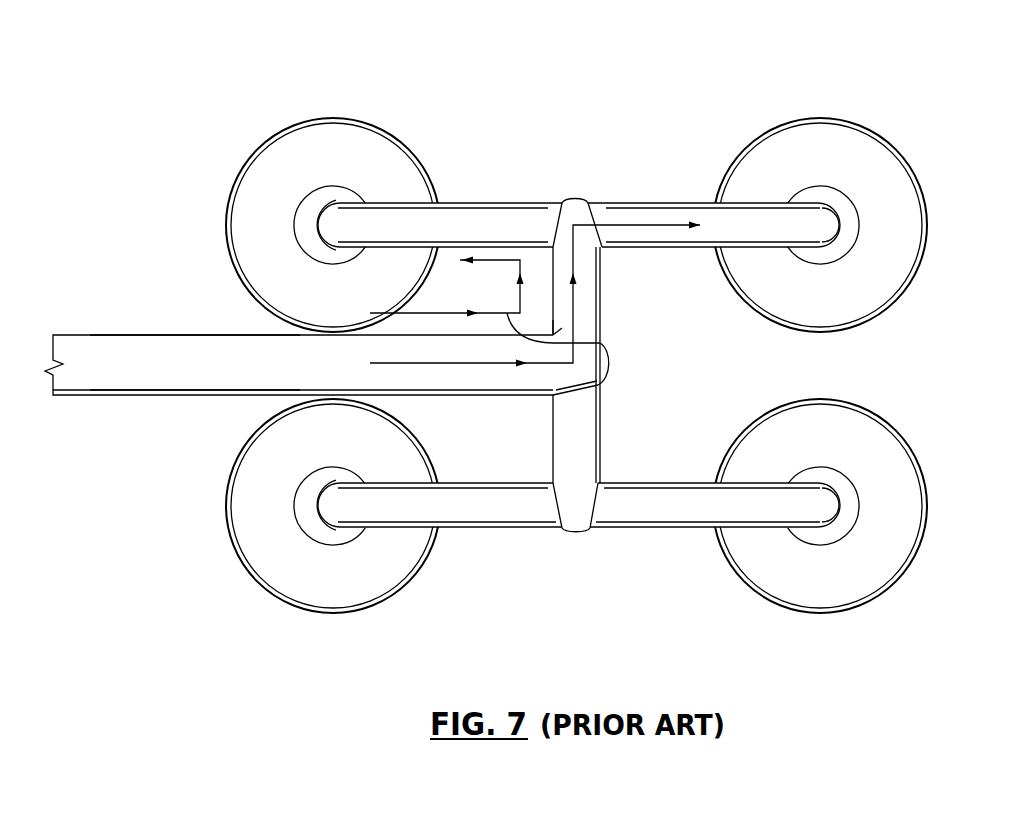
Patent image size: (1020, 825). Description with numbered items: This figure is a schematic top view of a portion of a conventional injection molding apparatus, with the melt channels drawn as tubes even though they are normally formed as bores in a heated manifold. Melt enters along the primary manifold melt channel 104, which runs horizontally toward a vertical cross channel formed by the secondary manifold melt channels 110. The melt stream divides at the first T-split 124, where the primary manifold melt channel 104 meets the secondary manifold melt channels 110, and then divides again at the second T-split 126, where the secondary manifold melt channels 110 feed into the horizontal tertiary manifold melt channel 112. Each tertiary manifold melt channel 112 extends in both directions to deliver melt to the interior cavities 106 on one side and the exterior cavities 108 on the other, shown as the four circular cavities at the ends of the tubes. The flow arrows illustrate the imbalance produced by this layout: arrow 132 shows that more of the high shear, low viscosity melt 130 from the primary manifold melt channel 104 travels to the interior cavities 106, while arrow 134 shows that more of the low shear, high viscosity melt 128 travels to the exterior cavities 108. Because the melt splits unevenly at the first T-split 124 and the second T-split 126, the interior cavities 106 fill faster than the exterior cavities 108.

The primary manifold melt channel 104 is at (85, 343).
The interior cavities 106 is at (331, 147).
The exterior cavities 108 is at (807, 150).
The secondary manifold melt channels 110 is at (590, 320).
The tertiary manifold melt channel 112 is at (470, 218).
The first T-split 124 is at (582, 372).
The second T-split 126 is at (558, 219).
The low shear, high viscosity melt 128 is at (255, 352).
The high shear, low viscosity melt 130 is at (160, 337).
The arrow 132 is at (600, 343).
The arrow 134 is at (580, 292).